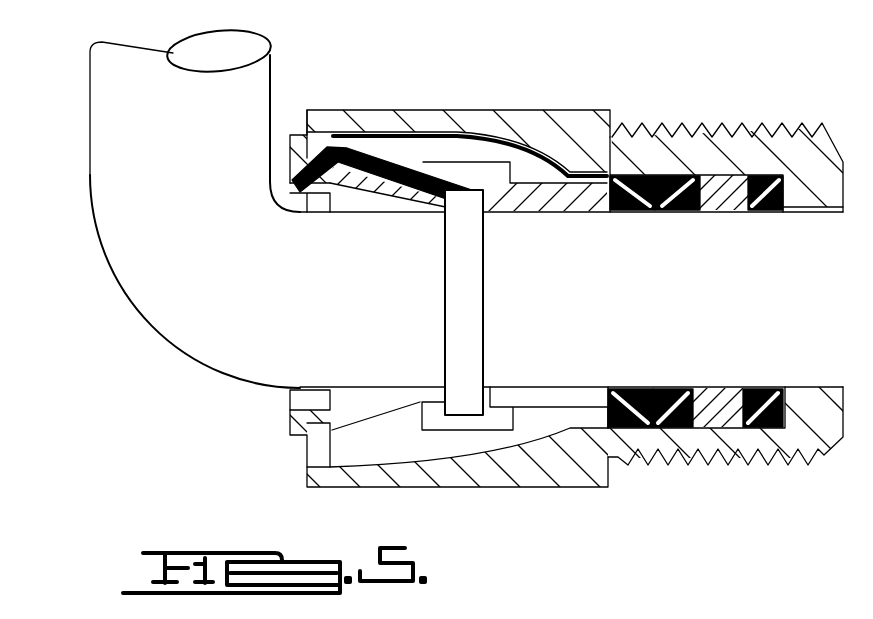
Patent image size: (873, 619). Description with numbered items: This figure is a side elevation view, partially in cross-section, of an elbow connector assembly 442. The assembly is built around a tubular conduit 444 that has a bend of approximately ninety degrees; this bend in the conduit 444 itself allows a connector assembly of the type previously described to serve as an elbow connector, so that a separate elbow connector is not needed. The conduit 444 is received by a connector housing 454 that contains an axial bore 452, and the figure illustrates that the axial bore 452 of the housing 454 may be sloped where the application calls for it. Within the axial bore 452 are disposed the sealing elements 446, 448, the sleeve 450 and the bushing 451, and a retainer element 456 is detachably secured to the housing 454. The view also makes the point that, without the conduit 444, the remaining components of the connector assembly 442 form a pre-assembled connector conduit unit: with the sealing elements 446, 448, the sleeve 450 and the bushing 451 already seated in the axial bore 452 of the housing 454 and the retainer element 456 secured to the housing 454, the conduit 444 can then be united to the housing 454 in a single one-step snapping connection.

The elbow connector assembly 442 is at (157, 355).
The tubular conduit 444 is at (115, 88).
The sealing element 446 is at (673, 210).
The sealing element 448 is at (777, 210).
The sleeve 450 is at (720, 390).
The bushing 451 is at (628, 207).
The axial bore 452 is at (476, 454).
The connector housing 454 is at (459, 112).
The retainer element 456 is at (548, 198).